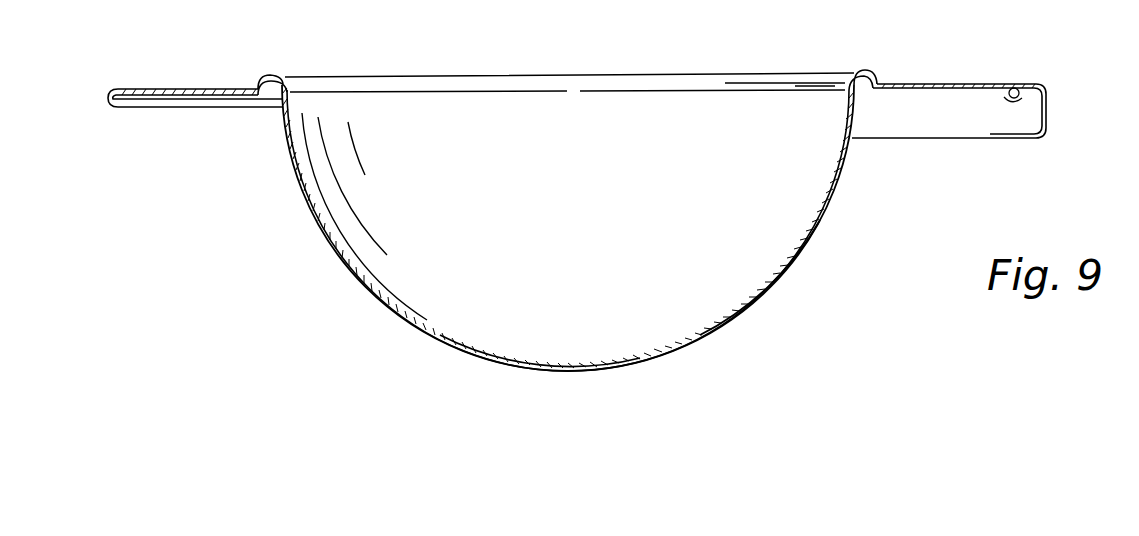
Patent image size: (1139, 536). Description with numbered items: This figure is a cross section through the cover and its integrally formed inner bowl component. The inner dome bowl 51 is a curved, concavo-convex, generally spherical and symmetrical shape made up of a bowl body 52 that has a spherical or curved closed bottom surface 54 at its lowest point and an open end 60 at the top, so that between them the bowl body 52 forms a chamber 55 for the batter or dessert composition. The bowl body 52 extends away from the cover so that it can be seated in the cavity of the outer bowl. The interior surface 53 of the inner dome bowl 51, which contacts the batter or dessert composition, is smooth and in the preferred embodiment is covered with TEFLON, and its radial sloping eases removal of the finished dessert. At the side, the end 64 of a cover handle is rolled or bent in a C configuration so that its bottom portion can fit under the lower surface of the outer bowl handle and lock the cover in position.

The inner dome bowl 51 is at (800, 253).
The bowl body 52 is at (292, 150).
The interior surface 53 is at (730, 312).
The closed bottom surface 54 is at (450, 347).
The chamber 55 is at (592, 202).
The open end 60 is at (787, 78).
The end of handle 64 is at (1047, 107).